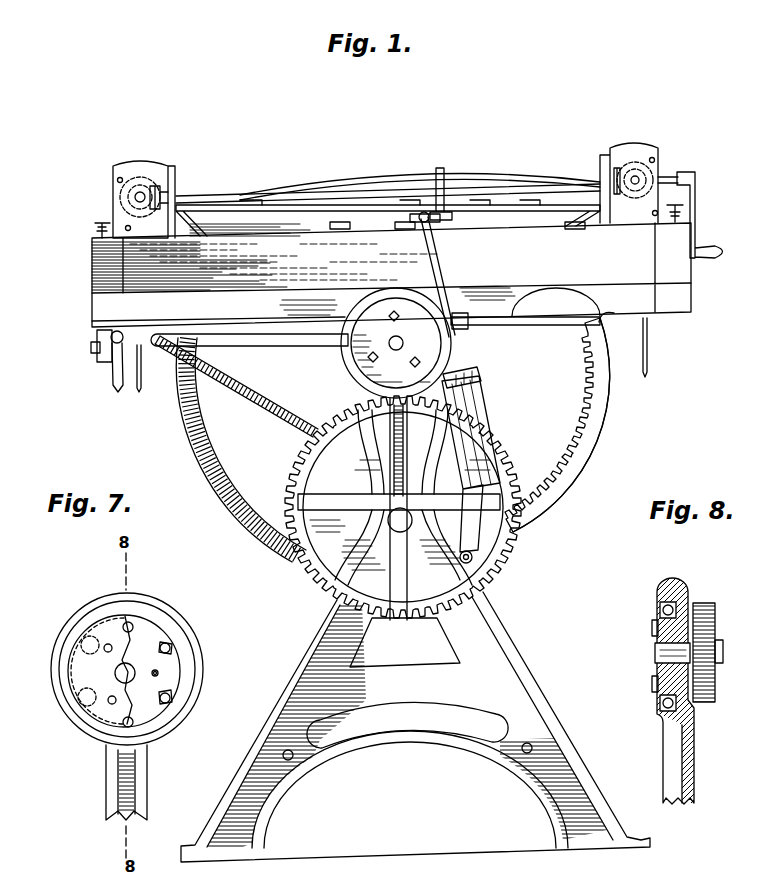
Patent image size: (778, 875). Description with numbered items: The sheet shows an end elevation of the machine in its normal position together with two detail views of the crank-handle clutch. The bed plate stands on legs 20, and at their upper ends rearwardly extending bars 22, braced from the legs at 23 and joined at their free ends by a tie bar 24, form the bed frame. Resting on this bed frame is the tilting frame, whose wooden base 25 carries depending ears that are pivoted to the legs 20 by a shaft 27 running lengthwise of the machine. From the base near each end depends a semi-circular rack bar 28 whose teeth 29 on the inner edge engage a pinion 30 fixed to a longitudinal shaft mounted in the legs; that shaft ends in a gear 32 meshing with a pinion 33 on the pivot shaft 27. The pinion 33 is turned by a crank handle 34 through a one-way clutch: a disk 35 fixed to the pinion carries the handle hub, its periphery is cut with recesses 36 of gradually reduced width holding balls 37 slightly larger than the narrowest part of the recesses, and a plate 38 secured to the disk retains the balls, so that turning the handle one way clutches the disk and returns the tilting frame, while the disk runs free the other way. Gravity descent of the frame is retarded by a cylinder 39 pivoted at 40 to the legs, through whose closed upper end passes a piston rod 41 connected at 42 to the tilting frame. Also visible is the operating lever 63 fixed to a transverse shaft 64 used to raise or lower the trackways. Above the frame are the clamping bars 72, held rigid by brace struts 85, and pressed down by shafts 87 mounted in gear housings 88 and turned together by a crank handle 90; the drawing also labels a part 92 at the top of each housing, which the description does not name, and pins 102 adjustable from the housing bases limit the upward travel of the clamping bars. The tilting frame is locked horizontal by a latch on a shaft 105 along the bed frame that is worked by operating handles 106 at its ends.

In FIG. 1, the legs 20 is at (507, 635).
In FIG. 1, the bars 22 is at (281, 338).
In FIG. 1, the brace 23 is at (270, 416).
In FIG. 1, the tie bar 24 is at (97, 341).
In FIG. 1, the base 25 is at (320, 306).
In FIG. 7, the shaft 27 is at (115, 676).
In FIG. 8, the shaft 27 is at (724, 651).
In FIG. 1, the rack bar 28 is at (586, 457).
In FIG. 1, the teeth 29 is at (572, 459).
In FIG. 1, the pinion 30 is at (380, 472).
In FIG. 1, the gear 32 is at (300, 556).
In FIG. 8, the pinion 33 is at (707, 603).
In FIG. 1, the crank handle 34 is at (392, 479).
In FIG. 7, the crank handle 34 is at (148, 772).
In FIG. 8, the crank handle 34 is at (665, 749).
In FIG. 7, the disk 35 is at (166, 676).
In FIG. 8, the disk 35 is at (656, 647).
In FIG. 7, the recesses 36 is at (174, 657).
In FIG. 7, the balls 37 is at (168, 645).
In FIG. 8, the balls 37 is at (659, 610).
In FIG. 7, the plate 38 is at (95, 707).
In FIG. 8, the plate 38 is at (660, 703).
In FIG. 1, the cylinder 39 is at (482, 398).
In FIG. 1, the pivotal connection 40 is at (460, 566).
In FIG. 1, the piston rod 41 is at (430, 262).
In FIG. 1, the connection 42 is at (452, 190).
In FIG. 1, the operating lever 63 is at (652, 384).
In FIG. 1, the shaft 64 is at (529, 324).
In FIG. 1, the clamping bars 72 is at (308, 218).
In FIG. 1, the brace struts 85 is at (401, 176).
In FIG. 1, the shaft 87 is at (372, 186).
In FIG. 1, the gear housings 88 is at (130, 176).
In FIG. 1, the crank handle 90 is at (697, 207).
In FIG. 1, the motor 92 is at (152, 166).
In FIG. 1, the pins 102 is at (95, 232).
In FIG. 1, the shaft 105 is at (95, 350).
In FIG. 1, the operating handles 106 is at (114, 380).